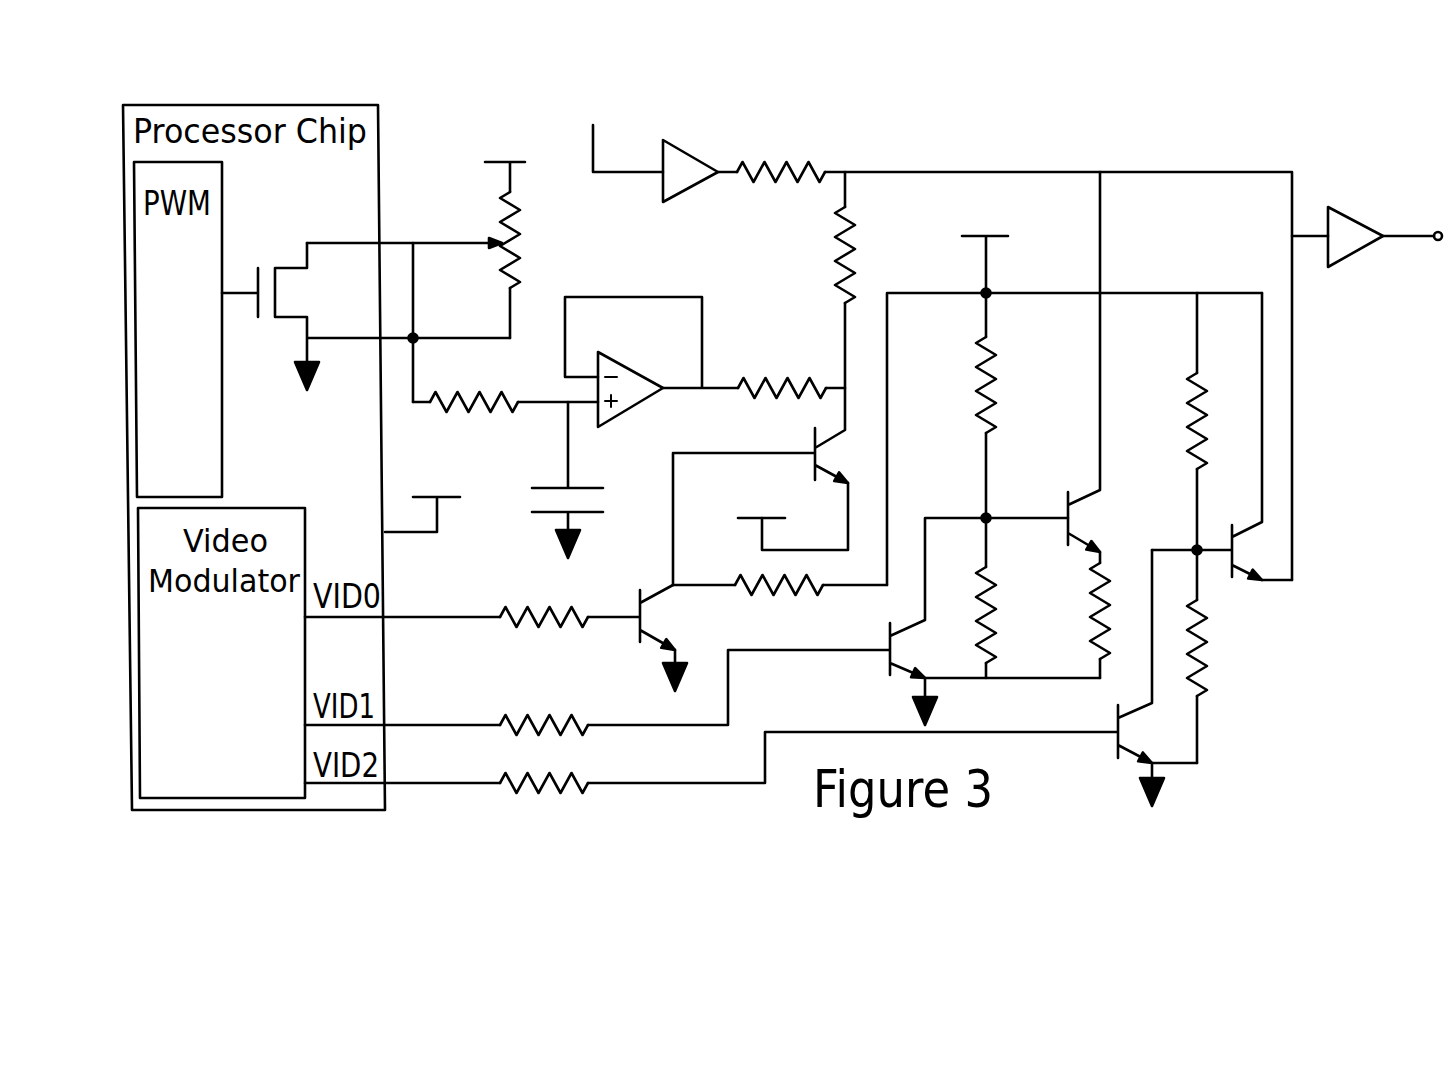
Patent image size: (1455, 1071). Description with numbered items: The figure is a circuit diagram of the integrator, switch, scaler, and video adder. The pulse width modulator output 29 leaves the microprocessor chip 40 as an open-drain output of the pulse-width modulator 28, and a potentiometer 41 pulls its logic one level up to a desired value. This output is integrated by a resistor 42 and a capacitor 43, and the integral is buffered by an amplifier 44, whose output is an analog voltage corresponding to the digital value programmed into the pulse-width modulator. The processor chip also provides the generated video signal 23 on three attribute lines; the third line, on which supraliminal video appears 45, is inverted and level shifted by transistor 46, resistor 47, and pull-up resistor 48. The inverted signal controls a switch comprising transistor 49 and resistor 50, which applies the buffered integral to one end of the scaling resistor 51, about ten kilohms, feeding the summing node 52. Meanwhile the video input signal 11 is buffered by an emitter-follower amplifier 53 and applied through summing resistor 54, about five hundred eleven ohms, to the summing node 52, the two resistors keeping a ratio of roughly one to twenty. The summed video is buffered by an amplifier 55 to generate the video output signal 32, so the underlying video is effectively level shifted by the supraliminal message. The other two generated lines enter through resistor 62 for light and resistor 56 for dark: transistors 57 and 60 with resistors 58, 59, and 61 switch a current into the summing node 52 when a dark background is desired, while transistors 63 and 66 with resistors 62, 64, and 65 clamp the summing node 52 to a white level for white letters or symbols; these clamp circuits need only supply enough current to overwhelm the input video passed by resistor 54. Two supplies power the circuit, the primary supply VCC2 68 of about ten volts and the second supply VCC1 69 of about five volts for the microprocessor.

The video input signal 11 is at (624, 180).
The generated video signal 23 is at (397, 625).
The pulse-width modulator 28 is at (228, 235).
The pulse width modulator output 29 is at (452, 236).
The video output signal 32 is at (1405, 228).
The microprocessor chip 40 is at (392, 188).
The potentiometer 41 is at (495, 270).
The resistor 42 is at (488, 389).
The capacitor 43 is at (562, 476).
The amplifier 44 is at (618, 354).
The supraliminal video line 45 is at (465, 609).
The transistor 46 is at (632, 606).
The resistor 47 is at (552, 633).
The pull-up resistor 48 is at (757, 603).
The transistor 49 is at (803, 438).
The resistor 50 is at (803, 371).
The scaling resistor 51 is at (865, 228).
The summing node 52 is at (1090, 158).
The emitter-follower amplifier 53 is at (690, 145).
The summing resistor 54 is at (763, 150).
The amplifier 55 is at (1365, 250).
The resistor 56 is at (507, 738).
The transistor 57 is at (885, 638).
The resistor 58 is at (1000, 402).
The resistor 59 is at (975, 622).
The transistor 60 is at (1084, 480).
The resistor 61 is at (1088, 620).
The resistor 62 is at (585, 770).
The transistor 63 is at (1108, 748).
The resistor 64 is at (1213, 653).
The resistor 65 is at (1183, 440).
The transistor 66 is at (1252, 513).
The VCC2 68 is at (1008, 247).
The VCC1 69 is at (448, 508).